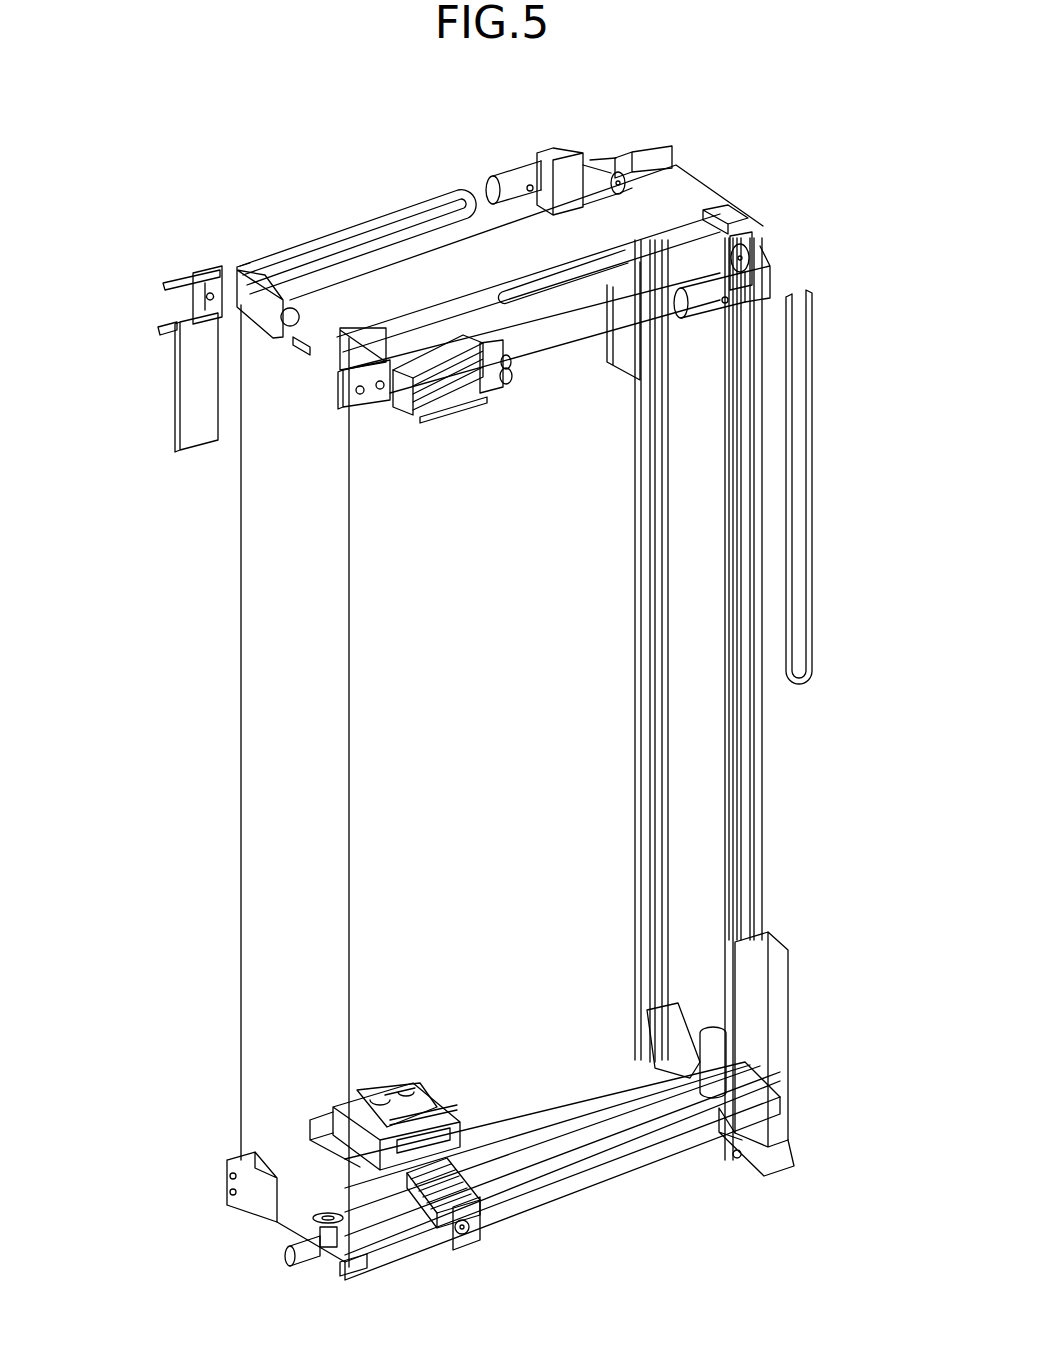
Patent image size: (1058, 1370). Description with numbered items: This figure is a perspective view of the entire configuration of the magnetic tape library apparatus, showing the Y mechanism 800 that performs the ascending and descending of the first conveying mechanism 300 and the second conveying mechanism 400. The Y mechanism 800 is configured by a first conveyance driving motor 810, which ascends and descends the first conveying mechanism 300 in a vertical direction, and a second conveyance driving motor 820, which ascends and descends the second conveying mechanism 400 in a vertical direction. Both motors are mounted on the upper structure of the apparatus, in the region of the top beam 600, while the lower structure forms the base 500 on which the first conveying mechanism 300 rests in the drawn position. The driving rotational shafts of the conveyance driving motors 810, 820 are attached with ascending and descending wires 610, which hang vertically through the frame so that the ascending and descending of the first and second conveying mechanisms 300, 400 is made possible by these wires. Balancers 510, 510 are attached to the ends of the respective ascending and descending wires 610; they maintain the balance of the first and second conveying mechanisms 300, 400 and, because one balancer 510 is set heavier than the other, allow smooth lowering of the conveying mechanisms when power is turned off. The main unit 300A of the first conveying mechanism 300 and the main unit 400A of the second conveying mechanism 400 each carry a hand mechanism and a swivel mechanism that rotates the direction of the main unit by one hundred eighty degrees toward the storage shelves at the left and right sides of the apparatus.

The first conveying mechanism 300 is at (397, 1081).
The main unit of the first conveying mechanism 300A is at (420, 1103).
The second conveying mechanism 400 is at (455, 413).
The main unit of the second conveying mechanism 400A is at (400, 392).
The base frame 500 is at (602, 1177).
The balancer 510 is at (177, 402).
The top beam 600 is at (453, 260).
The ascending and descending wire 610 is at (350, 588).
The Y mechanism 800 is at (714, 174).
The first conveyance driving motor 810 is at (538, 178).
The second conveyance driving motor 820 is at (756, 304).